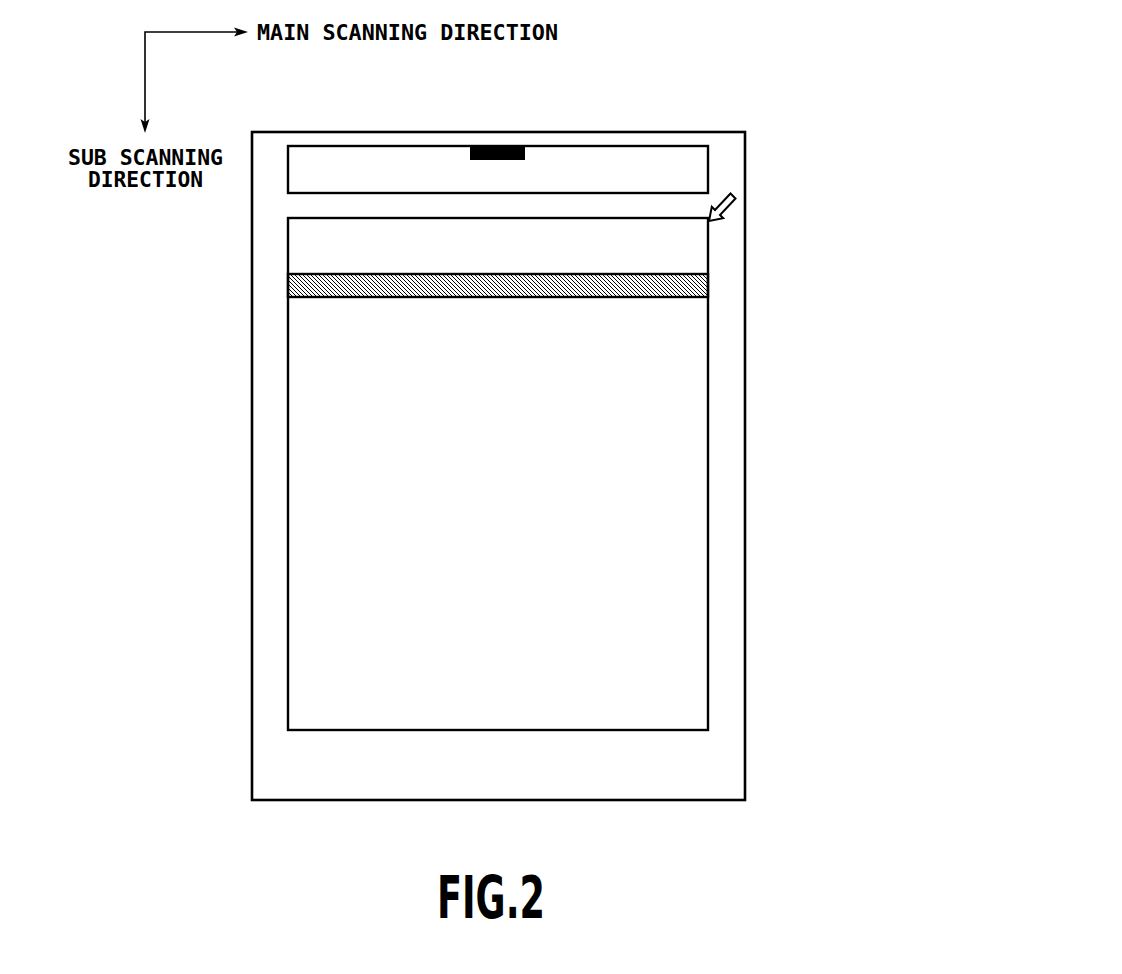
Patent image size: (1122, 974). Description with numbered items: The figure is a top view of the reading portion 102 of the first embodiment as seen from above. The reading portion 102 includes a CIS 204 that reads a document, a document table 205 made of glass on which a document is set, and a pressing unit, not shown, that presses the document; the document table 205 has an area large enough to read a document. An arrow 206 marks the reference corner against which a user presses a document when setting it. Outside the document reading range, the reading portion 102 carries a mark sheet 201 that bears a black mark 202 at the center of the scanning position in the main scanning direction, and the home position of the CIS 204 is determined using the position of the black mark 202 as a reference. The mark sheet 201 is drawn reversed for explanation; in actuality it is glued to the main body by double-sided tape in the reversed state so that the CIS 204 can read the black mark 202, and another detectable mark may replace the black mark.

The reading portion 102 is at (752, 63).
The mark sheet 201 is at (603, 152).
The black mark 202 is at (498, 152).
The CIS 204 is at (700, 283).
The document table 205 is at (698, 622).
The arrow 206 is at (732, 195).